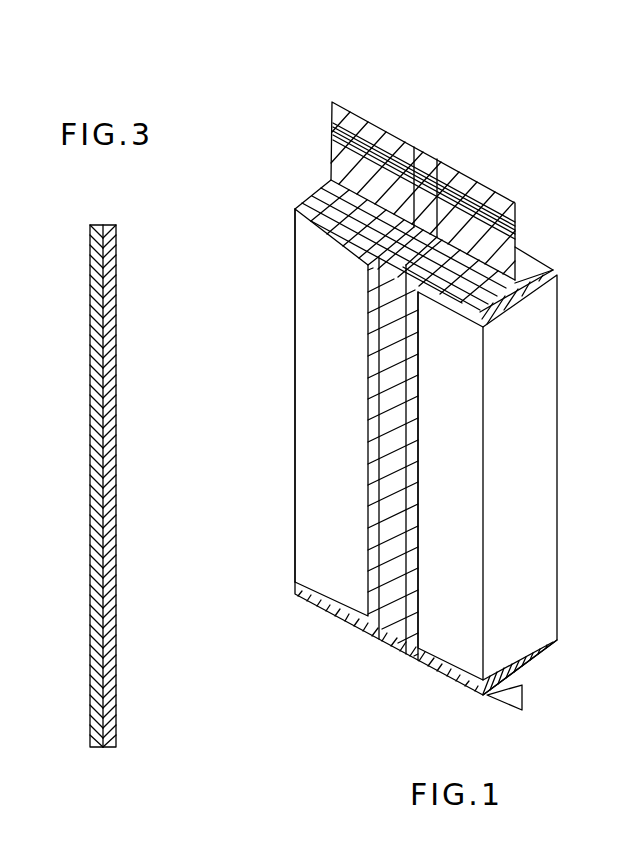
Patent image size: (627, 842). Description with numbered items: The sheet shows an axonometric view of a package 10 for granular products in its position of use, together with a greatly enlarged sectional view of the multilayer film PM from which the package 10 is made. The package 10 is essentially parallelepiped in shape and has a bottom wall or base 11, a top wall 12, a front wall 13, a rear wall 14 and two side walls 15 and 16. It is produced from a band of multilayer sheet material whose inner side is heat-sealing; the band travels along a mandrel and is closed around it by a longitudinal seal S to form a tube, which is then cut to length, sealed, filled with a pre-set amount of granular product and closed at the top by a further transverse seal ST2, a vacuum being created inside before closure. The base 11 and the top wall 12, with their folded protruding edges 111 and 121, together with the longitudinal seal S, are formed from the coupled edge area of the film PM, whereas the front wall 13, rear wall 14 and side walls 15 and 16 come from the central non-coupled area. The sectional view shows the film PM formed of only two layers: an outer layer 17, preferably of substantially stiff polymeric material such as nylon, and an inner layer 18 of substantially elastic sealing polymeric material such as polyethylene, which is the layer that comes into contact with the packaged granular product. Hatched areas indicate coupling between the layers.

In FIG. 1, the package 10 is at (431, 393).
In FIG. 1, the bottom wall or base 11 is at (447, 670).
In FIG. 1, the folded protruding edge 111 is at (517, 697).
In FIG. 1, the top wall 12 is at (331, 202).
In FIG. 1, the folded protruding edge 121 is at (449, 173).
In FIG. 1, the front wall 13 is at (565, 399).
In FIG. 1, the rear wall 14 is at (305, 412).
In FIG. 1, the side wall 15 is at (523, 495).
In FIG. 1, the side wall 16 is at (291, 352).
In FIG. 1, the longitudinal seal S is at (389, 568).
In FIG. 1, the transverse seal ST2 is at (494, 213).
In FIG. 3, the multilayer film PM is at (100, 486).
In FIG. 3, the outer layer 17 is at (115, 338).
In FIG. 3, the inner layer 18 is at (100, 320).